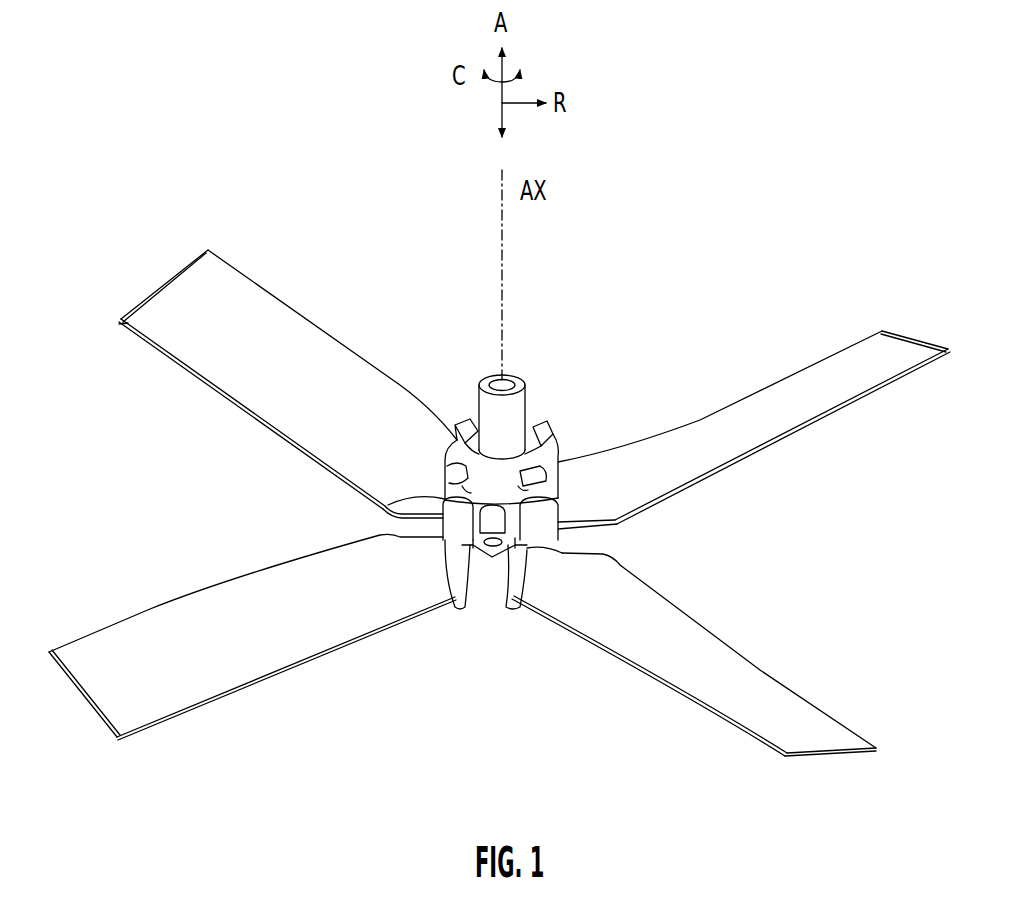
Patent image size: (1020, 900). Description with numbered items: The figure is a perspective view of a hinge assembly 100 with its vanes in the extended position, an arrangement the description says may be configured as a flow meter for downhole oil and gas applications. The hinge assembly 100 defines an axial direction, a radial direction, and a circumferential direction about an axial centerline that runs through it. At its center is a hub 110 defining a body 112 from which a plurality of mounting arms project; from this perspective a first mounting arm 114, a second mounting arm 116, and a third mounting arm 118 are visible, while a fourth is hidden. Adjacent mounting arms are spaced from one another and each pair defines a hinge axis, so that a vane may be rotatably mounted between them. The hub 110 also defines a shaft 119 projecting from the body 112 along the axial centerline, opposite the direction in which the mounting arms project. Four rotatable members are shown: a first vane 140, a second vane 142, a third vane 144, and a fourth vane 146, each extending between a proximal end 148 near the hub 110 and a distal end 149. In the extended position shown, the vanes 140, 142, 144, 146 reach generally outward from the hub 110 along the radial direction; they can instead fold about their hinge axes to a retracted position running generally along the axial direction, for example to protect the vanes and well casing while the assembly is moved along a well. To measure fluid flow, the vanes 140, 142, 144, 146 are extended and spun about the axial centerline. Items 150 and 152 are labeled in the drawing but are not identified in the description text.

The hinge assembly 100 is at (350, 238).
The hub 110 is at (434, 449).
The body 112 is at (527, 452).
The first mounting arm 114 is at (392, 508).
The second mounting arm 116 is at (509, 572).
The third mounting arm 118 is at (558, 510).
The shaft 119 is at (513, 381).
The first vane 140 is at (297, 664).
The second vane 142 is at (758, 670).
The third vane 144 is at (850, 402).
The fourth vane 146 is at (237, 391).
The proximal end 148 is at (464, 405).
The distal end 149 is at (117, 337).
The leg 150 is at (460, 586).
The blade root 152 is at (562, 541).